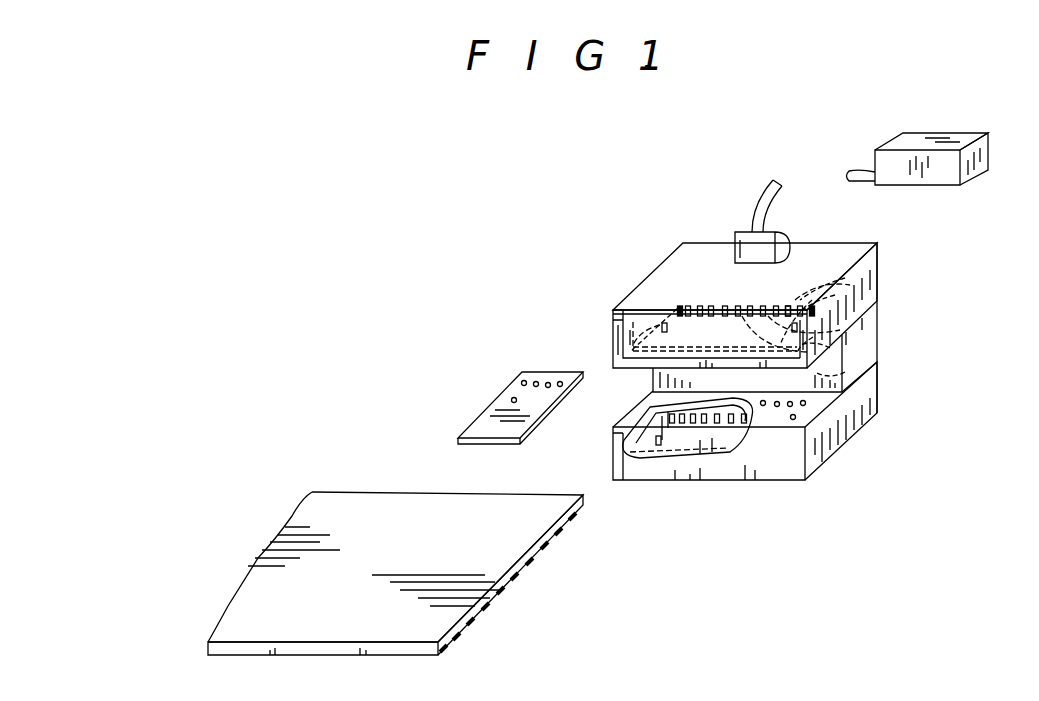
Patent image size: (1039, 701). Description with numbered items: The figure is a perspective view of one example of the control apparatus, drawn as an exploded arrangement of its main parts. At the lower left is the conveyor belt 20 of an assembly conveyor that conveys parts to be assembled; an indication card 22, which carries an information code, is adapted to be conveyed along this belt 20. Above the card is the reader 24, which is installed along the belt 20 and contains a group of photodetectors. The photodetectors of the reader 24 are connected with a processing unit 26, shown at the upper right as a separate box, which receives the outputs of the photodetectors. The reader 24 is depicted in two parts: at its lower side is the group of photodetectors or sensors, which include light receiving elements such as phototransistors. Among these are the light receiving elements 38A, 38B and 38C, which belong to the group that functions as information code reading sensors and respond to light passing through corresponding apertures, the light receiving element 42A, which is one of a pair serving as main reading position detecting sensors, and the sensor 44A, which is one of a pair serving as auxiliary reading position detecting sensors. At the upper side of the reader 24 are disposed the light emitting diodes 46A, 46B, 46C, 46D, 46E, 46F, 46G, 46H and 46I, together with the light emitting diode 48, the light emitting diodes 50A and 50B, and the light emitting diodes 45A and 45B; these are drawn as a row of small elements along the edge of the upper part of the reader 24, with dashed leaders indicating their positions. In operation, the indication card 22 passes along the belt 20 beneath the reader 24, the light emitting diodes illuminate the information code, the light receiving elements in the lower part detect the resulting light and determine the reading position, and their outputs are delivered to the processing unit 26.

The conveyor belt 20 is at (356, 492).
The indication card 22 is at (528, 372).
The reader 24 is at (878, 244).
The processing unit 26 is at (972, 174).
The light receiving element 38A is at (683, 424).
The light receiving element 38B is at (694, 424).
The light receiving element 38C is at (706, 424).
The light receiving element 42A is at (659, 445).
The sensor 44A is at (672, 424).
The light emitting diode 45A is at (672, 306).
The light emitting diode 45B is at (812, 300).
The light emitting diode 46A is at (686, 305).
The light emitting diode 46B is at (698, 304).
The light emitting diode 46C is at (710, 304).
The light emitting diode 46D is at (748, 304).
The light emitting diode 46E is at (775, 304).
The light emitting diode 46F is at (788, 304).
The light emitting diode 46G is at (845, 372).
The light emitting diode 46H is at (830, 348).
The light emitting diode 46I is at (845, 278).
The light emitting diode 48 is at (835, 295).
The light emitting diode 50A is at (662, 323).
The light emitting diode 50B is at (813, 337).